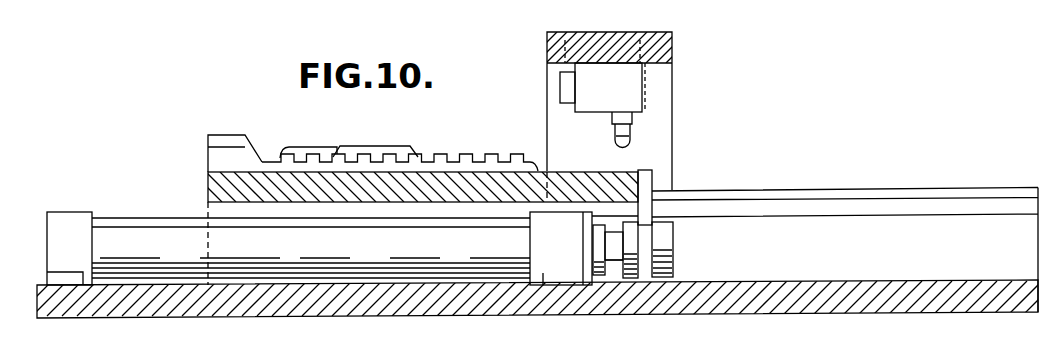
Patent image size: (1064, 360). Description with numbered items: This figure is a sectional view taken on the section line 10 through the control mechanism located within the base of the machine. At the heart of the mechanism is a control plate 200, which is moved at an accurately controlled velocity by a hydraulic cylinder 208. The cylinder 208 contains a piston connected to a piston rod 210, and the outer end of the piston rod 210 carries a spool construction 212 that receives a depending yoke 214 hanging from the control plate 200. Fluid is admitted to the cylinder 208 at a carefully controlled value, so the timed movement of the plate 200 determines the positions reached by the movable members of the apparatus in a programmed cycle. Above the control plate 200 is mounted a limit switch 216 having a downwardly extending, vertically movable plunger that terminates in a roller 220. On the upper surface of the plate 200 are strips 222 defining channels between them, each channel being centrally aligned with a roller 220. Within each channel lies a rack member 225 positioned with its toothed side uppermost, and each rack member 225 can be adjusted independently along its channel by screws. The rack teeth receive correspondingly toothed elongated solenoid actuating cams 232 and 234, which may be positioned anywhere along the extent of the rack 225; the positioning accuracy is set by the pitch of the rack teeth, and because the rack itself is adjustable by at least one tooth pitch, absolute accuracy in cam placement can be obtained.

The section line 10 is at (518, 356).
The control plate 200 is at (490, 172).
The hydraulic cylinder 208 is at (140, 235).
The piston rod 210 is at (614, 262).
The spool construction 212 is at (663, 248).
The depending yoke 214 is at (647, 212).
The limit switch 216 is at (645, 92).
The roller 220 is at (612, 145).
The strip 222 is at (248, 135).
The rack member 225 is at (437, 154).
The solenoid actuating cam 232 is at (306, 147).
The solenoid actuating cam 234 is at (382, 146).